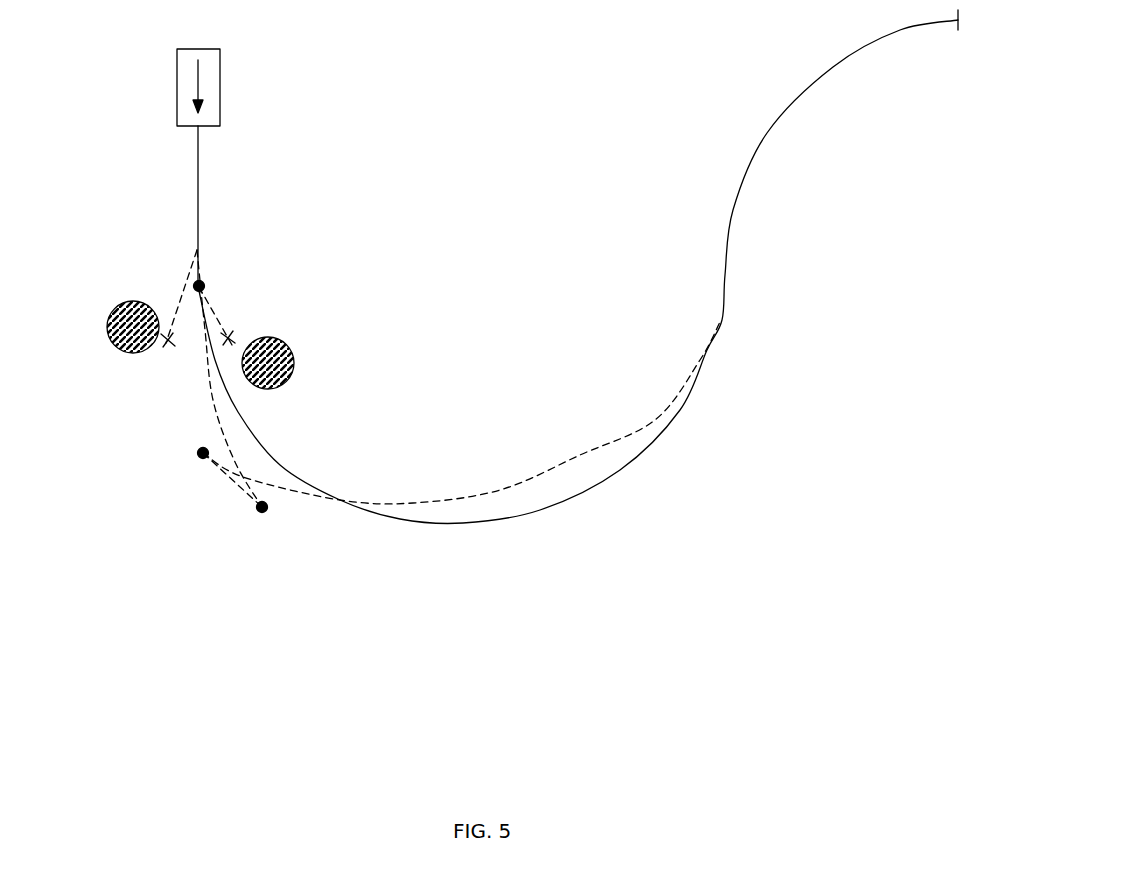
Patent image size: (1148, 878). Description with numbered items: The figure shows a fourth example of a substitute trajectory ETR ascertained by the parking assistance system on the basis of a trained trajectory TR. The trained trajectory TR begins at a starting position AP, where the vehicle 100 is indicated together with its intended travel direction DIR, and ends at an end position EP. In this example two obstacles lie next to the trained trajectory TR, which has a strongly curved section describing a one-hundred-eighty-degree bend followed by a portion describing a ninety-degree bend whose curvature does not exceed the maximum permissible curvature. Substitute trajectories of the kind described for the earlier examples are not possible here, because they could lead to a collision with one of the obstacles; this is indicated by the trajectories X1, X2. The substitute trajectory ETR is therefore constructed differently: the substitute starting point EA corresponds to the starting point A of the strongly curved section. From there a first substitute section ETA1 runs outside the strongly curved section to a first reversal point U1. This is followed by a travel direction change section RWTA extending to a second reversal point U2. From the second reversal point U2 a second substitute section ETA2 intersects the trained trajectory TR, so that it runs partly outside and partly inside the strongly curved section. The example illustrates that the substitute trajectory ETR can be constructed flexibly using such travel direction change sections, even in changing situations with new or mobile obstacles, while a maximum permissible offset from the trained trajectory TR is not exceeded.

The vehicle 100 is at (177, 56).
The travel direction DIR is at (197, 92).
The starting position AP is at (120, 117).
The trained trajectory TR is at (197, 183).
The trajectory X1 is at (183, 300).
The trajectory X2 is at (203, 275).
The starting point A is at (250, 301).
The substitute starting point EA is at (205, 287).
The substitute trajectory ETR is at (405, 437).
The end position EP is at (958, 22).
The first substitute section ETA1 is at (208, 391).
The second substitute section ETA2 is at (661, 415).
The travel direction change section RWTA is at (235, 483).
The first reversal point U1 is at (262, 508).
The second reversal point U2 is at (203, 453).